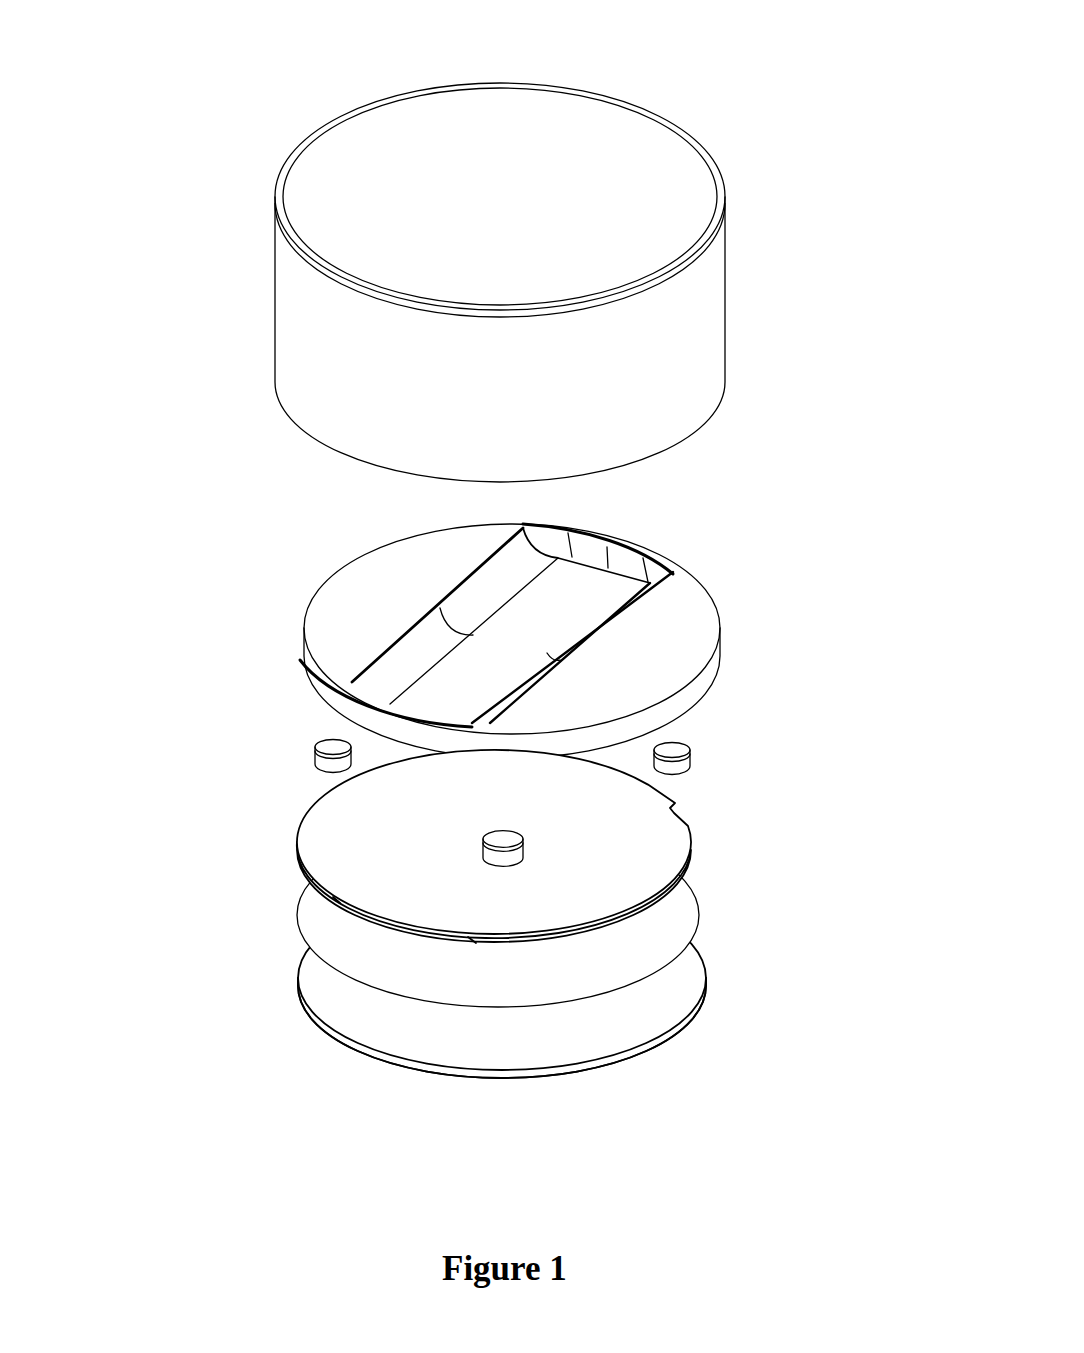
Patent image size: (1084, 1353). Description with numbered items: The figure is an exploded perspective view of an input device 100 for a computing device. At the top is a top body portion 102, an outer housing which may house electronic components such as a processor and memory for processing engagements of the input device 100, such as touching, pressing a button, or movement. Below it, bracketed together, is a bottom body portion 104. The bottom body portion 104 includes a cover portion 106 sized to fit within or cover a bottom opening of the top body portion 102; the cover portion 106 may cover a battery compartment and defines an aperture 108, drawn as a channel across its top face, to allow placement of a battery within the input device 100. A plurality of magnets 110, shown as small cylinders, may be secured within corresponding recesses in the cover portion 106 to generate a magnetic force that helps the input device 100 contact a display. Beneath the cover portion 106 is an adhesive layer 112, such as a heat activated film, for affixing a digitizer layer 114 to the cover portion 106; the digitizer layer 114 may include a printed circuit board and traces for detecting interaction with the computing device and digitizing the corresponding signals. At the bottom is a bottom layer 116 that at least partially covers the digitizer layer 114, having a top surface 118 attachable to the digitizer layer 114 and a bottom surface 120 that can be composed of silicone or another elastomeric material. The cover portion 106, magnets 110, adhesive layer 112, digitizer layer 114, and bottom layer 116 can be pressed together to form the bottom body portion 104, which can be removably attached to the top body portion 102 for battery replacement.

The input device 100 is at (506, 545).
The top body portion 102 is at (275, 287).
The bottom body portion 104 is at (554, 801).
The cover portion 106 is at (466, 641).
The aperture 108 is at (448, 600).
The magnets 110 is at (317, 745).
The adhesive layer 112 is at (300, 843).
The digitizer layer 114 is at (300, 890).
The bottom layer 116 is at (300, 982).
The top surface 118 is at (675, 998).
The bottom surface 120 is at (670, 1027).